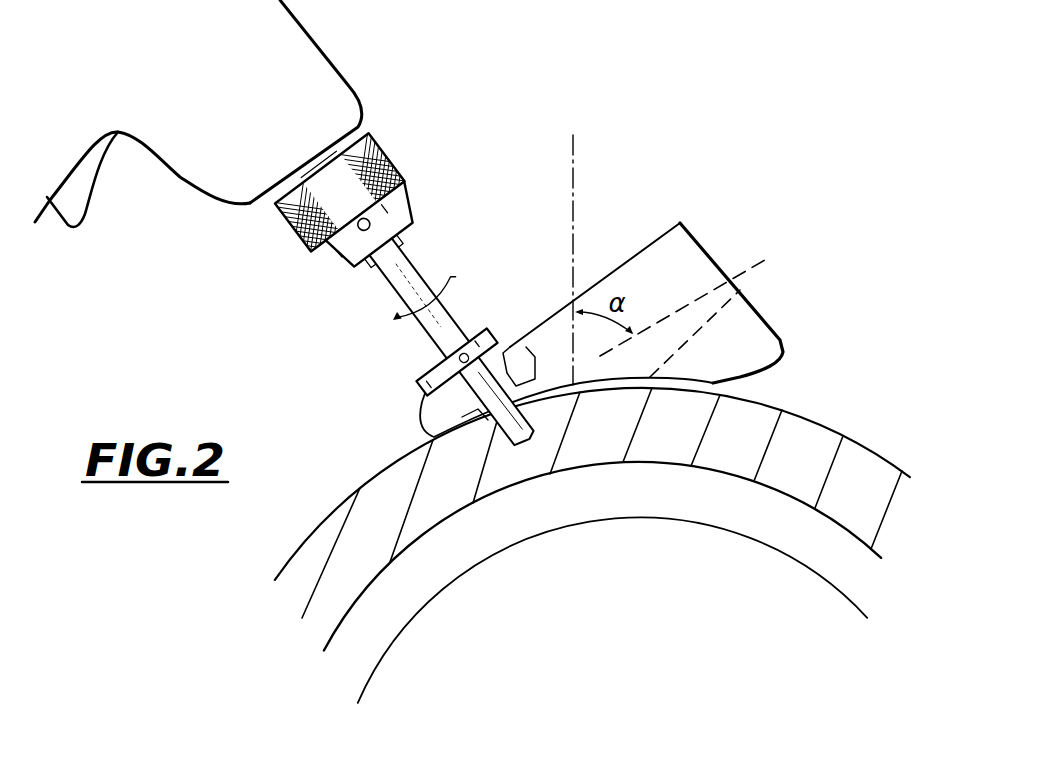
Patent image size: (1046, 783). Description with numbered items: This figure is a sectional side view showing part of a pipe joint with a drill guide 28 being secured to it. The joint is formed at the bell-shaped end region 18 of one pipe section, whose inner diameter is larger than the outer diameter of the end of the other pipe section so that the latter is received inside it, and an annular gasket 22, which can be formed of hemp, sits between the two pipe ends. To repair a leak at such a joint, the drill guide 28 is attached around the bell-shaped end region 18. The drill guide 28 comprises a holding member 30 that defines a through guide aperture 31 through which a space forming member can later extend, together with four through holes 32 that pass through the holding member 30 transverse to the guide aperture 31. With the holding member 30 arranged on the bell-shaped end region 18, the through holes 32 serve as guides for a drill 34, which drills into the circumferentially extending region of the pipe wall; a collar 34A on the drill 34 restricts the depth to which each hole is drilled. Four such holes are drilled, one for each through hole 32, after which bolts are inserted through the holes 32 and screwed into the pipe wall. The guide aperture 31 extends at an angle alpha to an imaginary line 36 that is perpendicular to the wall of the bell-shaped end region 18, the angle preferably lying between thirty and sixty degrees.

The bell-shaped end region 18 is at (753, 435).
The annular gasket 22 is at (600, 497).
The drill guide 28 is at (688, 210).
The holding member 30 is at (755, 333).
The through guide aperture 31 is at (770, 257).
The through holes 32 is at (420, 452).
The drill 34 is at (378, 96).
The collar 34A is at (432, 367).
The imaginary line 36 is at (575, 169).